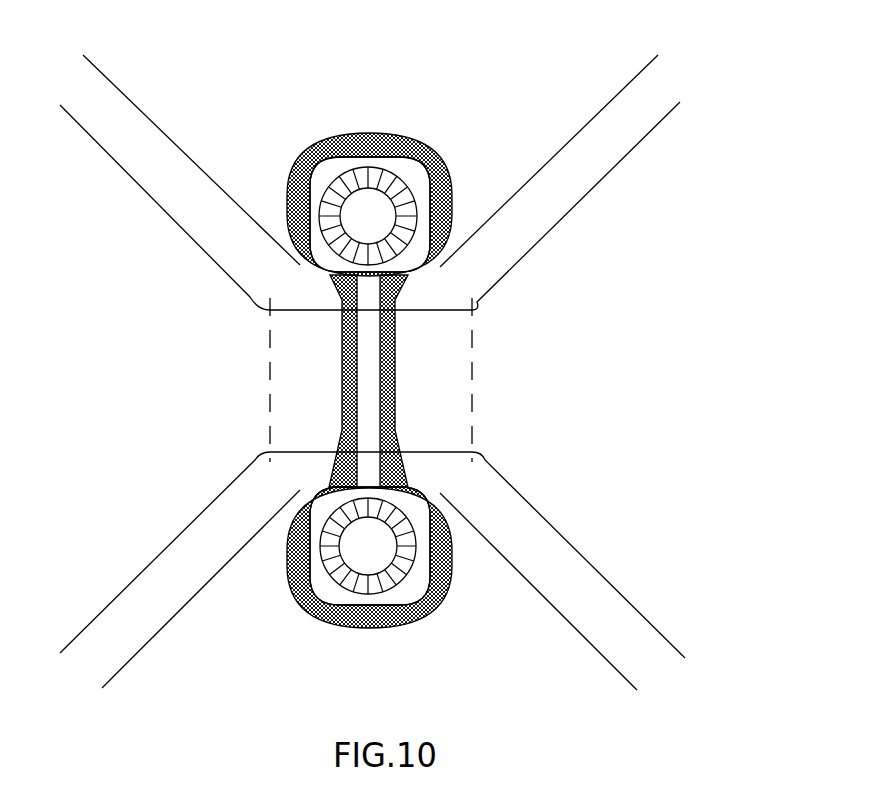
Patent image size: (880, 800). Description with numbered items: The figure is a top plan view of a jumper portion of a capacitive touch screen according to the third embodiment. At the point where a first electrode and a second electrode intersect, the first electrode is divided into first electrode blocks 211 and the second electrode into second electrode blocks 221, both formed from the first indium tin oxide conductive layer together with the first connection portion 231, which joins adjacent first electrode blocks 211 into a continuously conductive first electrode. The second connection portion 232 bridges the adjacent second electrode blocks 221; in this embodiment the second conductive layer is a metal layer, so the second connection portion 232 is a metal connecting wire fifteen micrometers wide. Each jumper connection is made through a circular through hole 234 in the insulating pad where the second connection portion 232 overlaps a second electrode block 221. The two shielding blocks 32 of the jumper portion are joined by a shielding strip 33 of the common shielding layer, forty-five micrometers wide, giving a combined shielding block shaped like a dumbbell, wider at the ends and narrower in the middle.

The shielding block 32 is at (357, 133).
The shielding strip 33 is at (342, 386).
The first electrode block 211 is at (577, 550).
The second electrode block 221 is at (563, 613).
The first connection portion 231 is at (435, 427).
The second connection portion 232 is at (328, 170).
The through hole 234 is at (393, 180).